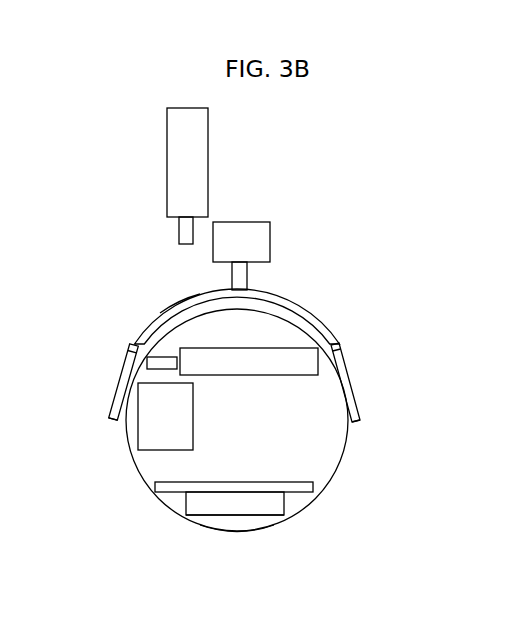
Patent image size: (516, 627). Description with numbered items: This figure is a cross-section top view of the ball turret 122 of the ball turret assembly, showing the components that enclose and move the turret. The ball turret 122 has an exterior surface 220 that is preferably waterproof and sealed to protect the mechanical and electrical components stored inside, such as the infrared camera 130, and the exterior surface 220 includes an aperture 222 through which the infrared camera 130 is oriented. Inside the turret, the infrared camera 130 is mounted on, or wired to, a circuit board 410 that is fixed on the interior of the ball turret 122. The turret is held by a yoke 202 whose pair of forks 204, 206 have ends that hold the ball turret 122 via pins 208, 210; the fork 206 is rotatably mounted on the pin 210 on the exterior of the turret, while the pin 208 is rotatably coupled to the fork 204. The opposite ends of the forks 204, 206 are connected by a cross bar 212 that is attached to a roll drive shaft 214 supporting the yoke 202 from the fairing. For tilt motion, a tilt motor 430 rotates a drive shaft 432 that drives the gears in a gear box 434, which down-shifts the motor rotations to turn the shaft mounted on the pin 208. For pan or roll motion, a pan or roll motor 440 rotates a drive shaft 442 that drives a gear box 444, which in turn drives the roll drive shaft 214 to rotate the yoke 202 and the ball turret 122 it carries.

The ball turret 122 is at (322, 503).
The infrared camera 130 is at (208, 510).
The yoke 202 is at (308, 309).
The fork 204 is at (348, 360).
The fork 206 is at (120, 380).
The pin 208 is at (360, 418).
The pin 210 is at (117, 422).
The cross bar 212 is at (180, 290).
The roll drive shaft 214 is at (248, 272).
The exterior surface 220 is at (167, 503).
The aperture 222 is at (263, 523).
The circuit board 410 is at (242, 493).
The tilt motor 430 is at (285, 358).
The drive shaft 432 is at (152, 357).
The gear box 434 is at (147, 450).
The pan or roll motor 440 is at (203, 177).
The drive shaft 442 is at (187, 228).
The gear box 444 is at (252, 223).